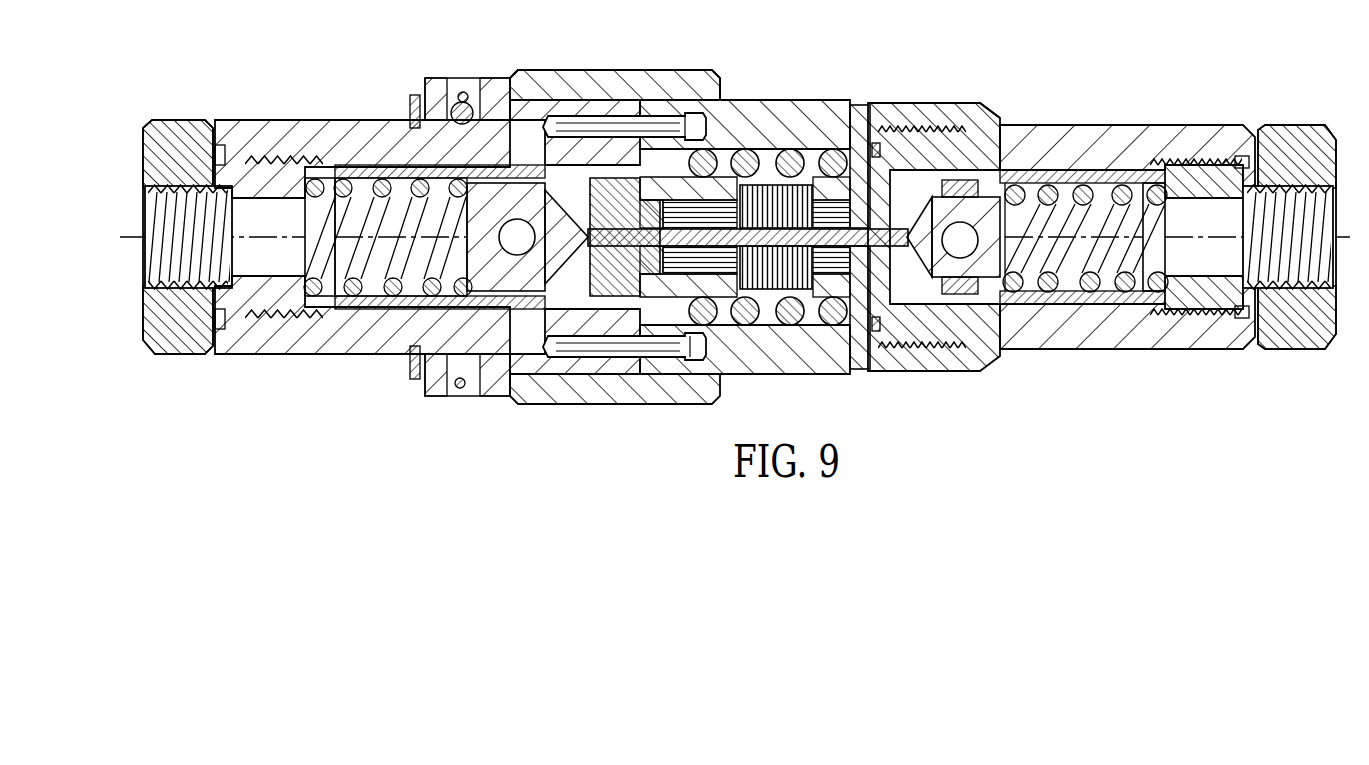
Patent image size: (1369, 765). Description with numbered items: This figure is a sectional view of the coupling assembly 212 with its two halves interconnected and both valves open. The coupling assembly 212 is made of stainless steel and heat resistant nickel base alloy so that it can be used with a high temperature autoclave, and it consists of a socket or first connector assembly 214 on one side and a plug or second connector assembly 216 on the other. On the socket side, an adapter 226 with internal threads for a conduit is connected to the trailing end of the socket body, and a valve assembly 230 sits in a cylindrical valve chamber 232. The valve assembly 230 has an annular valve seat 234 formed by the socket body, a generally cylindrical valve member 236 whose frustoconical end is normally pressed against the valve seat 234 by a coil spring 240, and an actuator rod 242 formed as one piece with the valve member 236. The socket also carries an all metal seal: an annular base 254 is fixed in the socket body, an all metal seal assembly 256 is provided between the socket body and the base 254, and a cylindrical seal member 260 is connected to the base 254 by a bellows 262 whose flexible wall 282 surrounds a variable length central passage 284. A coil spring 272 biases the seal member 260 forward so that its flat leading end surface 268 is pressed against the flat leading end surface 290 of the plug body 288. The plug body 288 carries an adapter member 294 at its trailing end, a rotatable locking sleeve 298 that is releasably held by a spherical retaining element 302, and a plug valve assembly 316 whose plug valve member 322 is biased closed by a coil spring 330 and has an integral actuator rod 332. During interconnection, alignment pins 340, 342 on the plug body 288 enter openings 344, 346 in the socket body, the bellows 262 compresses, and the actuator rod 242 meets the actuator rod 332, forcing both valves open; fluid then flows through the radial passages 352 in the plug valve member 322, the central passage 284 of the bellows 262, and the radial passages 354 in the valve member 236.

The coupling assembly 212 is at (815, 70).
The socket or first connector assembly 214 is at (1003, 72).
The plug or second connector assembly 216 is at (297, 117).
The adapter 226 is at (1308, 343).
The valve assembly 230 is at (1062, 163).
The valve chamber 232 is at (977, 308).
The valve seat 234 is at (918, 355).
The valve member 236 is at (1108, 177).
The coil spring 240 is at (1160, 300).
The actuator rod 242 is at (678, 250).
The base 254 is at (862, 112).
The all metal seal assembly 256 is at (912, 160).
The seal member 260 is at (720, 172).
The bellows 262 is at (802, 187).
The leading end surface 268 is at (658, 122).
The coil spring 272 is at (806, 326).
The flexible wall 282 is at (762, 293).
The central passage 284 is at (778, 290).
The plug body 288 is at (292, 347).
The leading end surface 290 is at (638, 352).
The adapter member 294 is at (190, 347).
The locking sleeve 298 is at (627, 100).
The retaining element 302 is at (440, 88).
The plug valve assembly 316 is at (367, 312).
The plug valve member 322 is at (396, 300).
The coil spring 330 is at (312, 280).
The actuator rod 332 is at (600, 255).
The alignment pin 340 is at (670, 350).
The alignment pin 342 is at (600, 135).
The opening 344 is at (693, 352).
The opening 346 is at (700, 120).
The radially extending circular passages 352 is at (517, 222).
The radially extending circular passages 354 is at (968, 196).